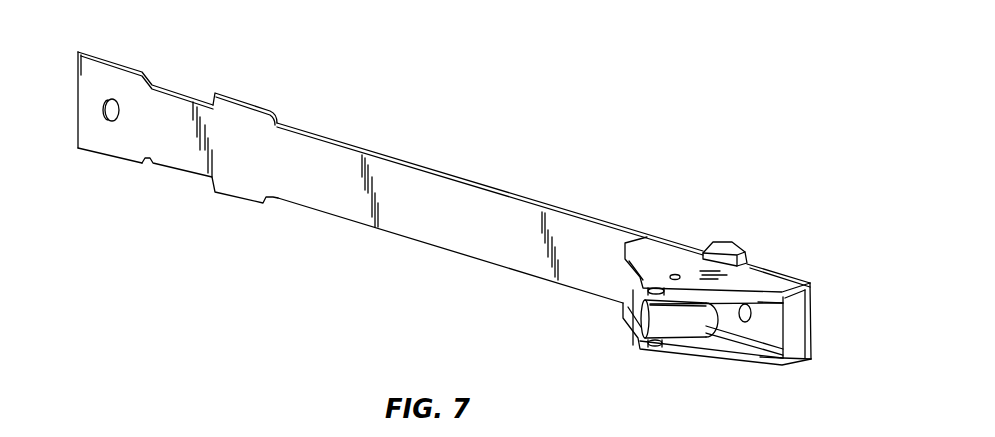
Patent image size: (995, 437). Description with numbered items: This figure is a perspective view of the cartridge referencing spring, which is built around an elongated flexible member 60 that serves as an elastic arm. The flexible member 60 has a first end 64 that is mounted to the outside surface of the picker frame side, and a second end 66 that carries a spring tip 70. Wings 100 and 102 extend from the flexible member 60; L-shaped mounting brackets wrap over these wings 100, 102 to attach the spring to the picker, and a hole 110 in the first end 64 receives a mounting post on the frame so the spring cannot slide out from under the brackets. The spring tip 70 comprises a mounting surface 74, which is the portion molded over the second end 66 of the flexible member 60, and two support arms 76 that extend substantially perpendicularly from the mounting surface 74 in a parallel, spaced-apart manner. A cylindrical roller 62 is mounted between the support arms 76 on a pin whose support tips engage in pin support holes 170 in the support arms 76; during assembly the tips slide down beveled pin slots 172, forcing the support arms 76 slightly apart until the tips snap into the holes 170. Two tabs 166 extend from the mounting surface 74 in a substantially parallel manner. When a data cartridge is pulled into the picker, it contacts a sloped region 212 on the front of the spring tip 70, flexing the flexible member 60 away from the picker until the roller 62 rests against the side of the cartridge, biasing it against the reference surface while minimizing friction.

The flexible member 60 is at (425, 200).
The roller 62 is at (653, 317).
The first end 64 is at (123, 111).
The second end 66 is at (607, 257).
The spring tip 70 is at (731, 207).
The mounting surface 74 is at (787, 277).
The support arms 76 is at (648, 253).
The wing 100 is at (120, 62).
The wing 102 is at (249, 103).
The hole 110 is at (105, 110).
The tabs 166 is at (728, 243).
The pin support holes 170 is at (675, 273).
The beveled pin slots 172 is at (652, 346).
The sloped region 212 is at (758, 302).